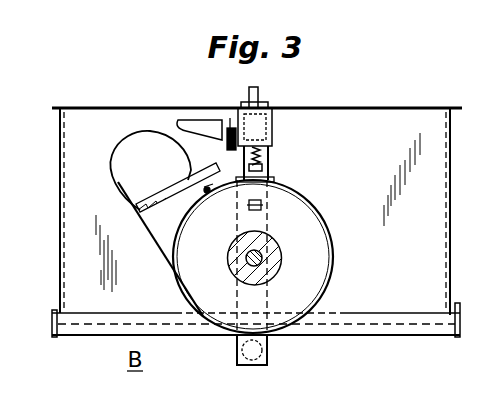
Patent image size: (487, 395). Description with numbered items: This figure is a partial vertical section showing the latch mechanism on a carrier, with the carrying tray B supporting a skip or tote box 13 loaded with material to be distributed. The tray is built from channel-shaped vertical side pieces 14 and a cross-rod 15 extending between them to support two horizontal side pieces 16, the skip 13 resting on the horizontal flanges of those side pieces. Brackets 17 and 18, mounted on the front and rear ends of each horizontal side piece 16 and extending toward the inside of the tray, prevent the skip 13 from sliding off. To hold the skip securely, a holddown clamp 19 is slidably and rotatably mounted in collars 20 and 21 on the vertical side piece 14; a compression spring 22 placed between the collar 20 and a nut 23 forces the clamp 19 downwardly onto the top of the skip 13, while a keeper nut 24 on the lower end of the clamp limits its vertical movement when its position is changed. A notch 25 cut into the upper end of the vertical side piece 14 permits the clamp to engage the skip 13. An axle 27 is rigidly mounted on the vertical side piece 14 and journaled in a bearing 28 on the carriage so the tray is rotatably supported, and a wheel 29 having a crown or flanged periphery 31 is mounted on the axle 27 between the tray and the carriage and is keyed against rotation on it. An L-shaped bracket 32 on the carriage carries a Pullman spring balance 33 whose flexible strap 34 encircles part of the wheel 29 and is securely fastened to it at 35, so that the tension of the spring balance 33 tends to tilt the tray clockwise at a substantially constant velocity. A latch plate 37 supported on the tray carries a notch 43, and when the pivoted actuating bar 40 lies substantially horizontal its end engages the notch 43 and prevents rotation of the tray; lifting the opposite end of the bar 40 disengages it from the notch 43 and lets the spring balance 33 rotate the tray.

The skip or tote box 13 is at (403, 132).
The vertical side piece 14 is at (236, 351).
The cross-rod 15 is at (268, 352).
The horizontal side piece 16 is at (425, 337).
The bracket 17 is at (459, 303).
The bracket 18 is at (51, 318).
The holddown clamp 19 is at (262, 103).
The collar 20 is at (276, 126).
The collar 21 is at (283, 172).
The compression spring 22 is at (262, 157).
The nut 23 is at (268, 172).
The keeper nut 24 is at (268, 206).
The notch 25 is at (251, 102).
The axle 27 is at (265, 254).
The bearing 28 is at (274, 266).
The wheel 29 is at (316, 289).
The crown or flanged periphery 31 is at (333, 242).
The L-shaped bracket 32 is at (153, 206).
The Pullman spring balance 33 is at (114, 166).
The flexible strap 34 is at (170, 268).
The fastening point 35 is at (208, 195).
The latch plate 37 is at (200, 125).
The actuating bar 40 is at (226, 150).
The notch 43 is at (228, 130).